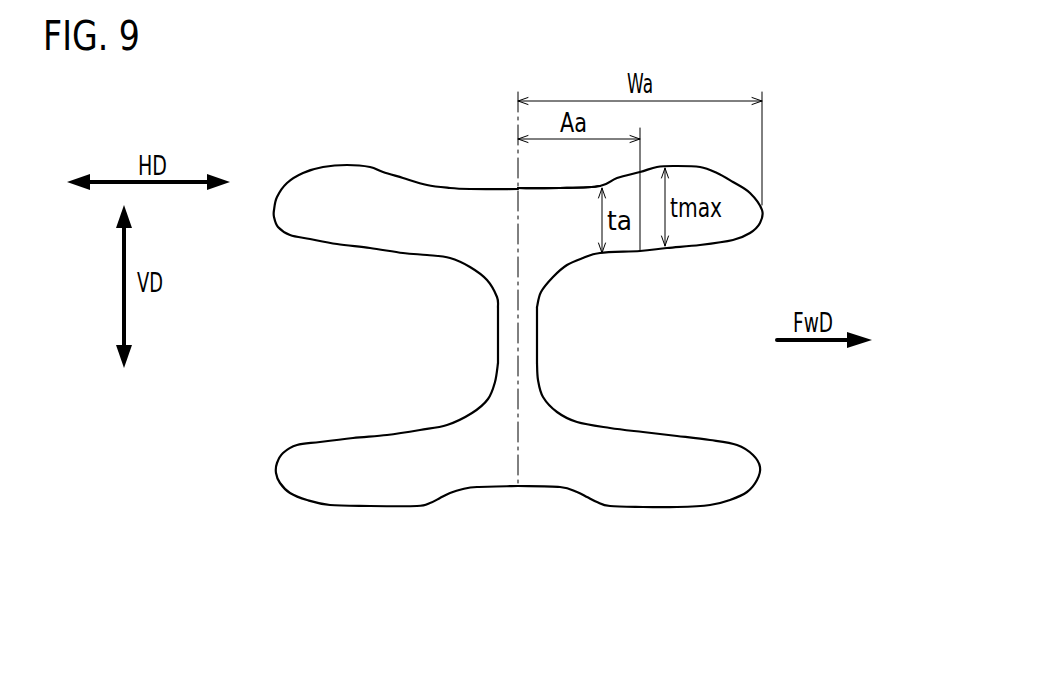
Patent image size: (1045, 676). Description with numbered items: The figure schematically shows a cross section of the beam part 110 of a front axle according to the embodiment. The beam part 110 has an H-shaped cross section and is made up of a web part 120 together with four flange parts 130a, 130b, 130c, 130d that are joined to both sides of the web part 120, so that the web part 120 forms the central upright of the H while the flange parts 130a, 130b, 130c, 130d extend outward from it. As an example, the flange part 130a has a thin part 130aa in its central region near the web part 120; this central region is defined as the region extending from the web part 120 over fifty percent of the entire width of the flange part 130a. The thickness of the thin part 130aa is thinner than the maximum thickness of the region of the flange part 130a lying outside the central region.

The beam part 110 is at (288, 94).
The web part 120 is at (507, 354).
The flange part 130a is at (690, 237).
The thin part 130aa is at (593, 188).
The flange part 130b is at (697, 480).
The flange part 130c is at (383, 233).
The flange part 130d is at (350, 480).